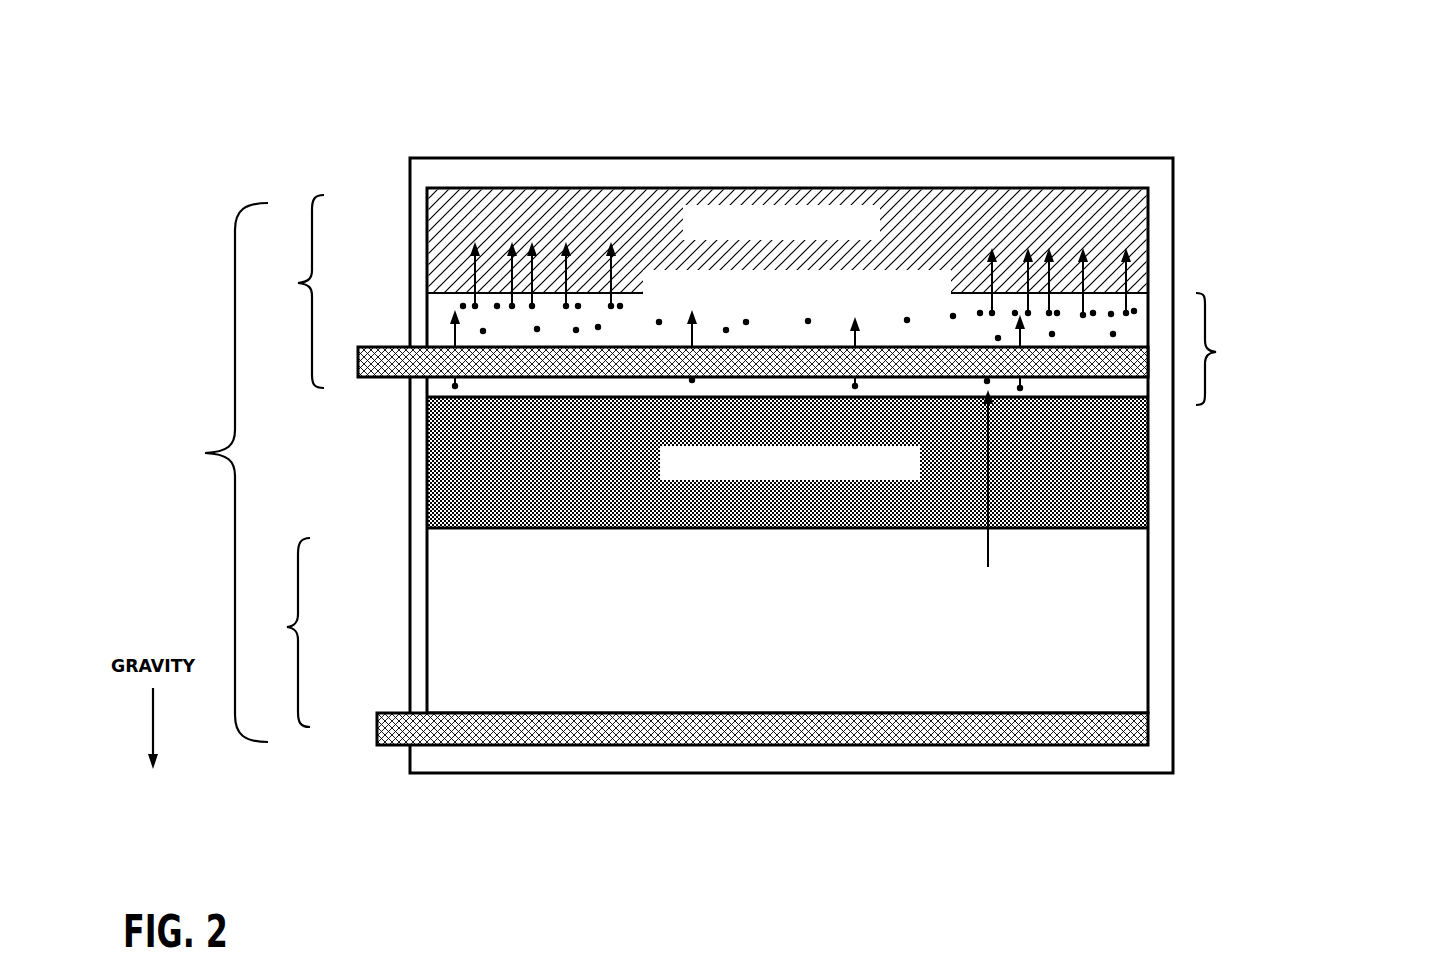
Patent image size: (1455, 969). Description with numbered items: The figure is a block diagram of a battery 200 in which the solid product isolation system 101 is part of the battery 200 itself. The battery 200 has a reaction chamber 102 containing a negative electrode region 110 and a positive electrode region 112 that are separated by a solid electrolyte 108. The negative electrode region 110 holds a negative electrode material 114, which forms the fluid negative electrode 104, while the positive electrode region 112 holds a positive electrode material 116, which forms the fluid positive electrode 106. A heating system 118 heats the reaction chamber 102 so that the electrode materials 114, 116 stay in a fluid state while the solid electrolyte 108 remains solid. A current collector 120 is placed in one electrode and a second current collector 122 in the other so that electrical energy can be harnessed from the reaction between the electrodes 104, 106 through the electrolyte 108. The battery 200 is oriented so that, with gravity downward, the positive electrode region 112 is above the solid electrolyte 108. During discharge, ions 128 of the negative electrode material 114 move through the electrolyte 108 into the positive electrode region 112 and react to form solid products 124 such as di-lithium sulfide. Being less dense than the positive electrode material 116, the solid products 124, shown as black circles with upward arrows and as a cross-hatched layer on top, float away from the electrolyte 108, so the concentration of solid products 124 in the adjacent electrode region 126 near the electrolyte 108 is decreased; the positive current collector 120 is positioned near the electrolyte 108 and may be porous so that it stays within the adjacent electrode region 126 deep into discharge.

The solid product isolation system 101 is at (464, 114).
The reaction chamber 102 is at (235, 238).
The fluid negative electrode 104 is at (1148, 668).
The fluid positive electrode 106 is at (1148, 293).
The solid electrolyte 108 is at (1148, 462).
The negative electrode region 110 is at (277, 632).
The positive electrode region 112 is at (287, 291).
The negative electrode material 114 is at (716, 692).
The positive electrode material 116 is at (641, 278).
The heating system 118 is at (1173, 502).
The positive current collector 120 is at (375, 379).
The second current collector 122 is at (370, 742).
The solid products 124 is at (1072, 223).
The adjacent electrode region 126 is at (1208, 302).
The ions 128 is at (988, 553).
The battery 200 is at (263, 847).